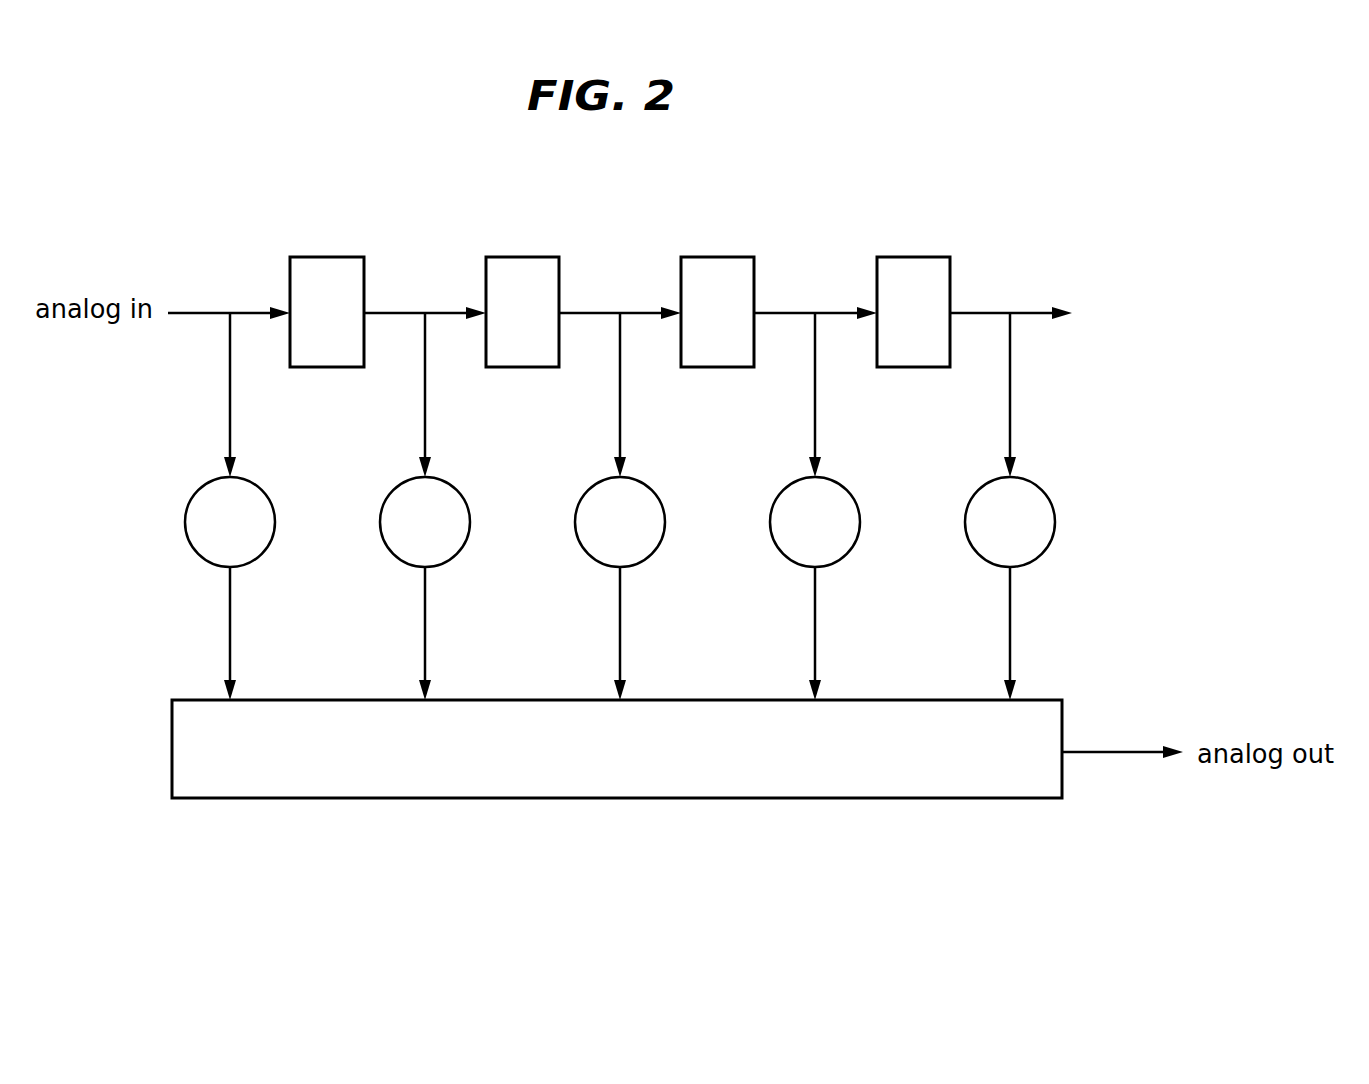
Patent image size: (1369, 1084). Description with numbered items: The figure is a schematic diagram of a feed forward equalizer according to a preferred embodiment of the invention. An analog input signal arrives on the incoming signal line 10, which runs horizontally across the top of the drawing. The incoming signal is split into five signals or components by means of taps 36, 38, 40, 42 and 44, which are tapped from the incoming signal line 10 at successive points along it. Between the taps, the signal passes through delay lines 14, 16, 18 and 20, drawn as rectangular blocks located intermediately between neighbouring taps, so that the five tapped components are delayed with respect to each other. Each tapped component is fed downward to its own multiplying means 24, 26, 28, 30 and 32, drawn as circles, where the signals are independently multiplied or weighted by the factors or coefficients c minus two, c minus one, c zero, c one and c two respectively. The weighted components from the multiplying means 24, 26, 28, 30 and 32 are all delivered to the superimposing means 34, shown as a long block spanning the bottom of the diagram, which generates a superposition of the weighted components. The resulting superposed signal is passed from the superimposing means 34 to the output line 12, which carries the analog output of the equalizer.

The incoming signal line 10 is at (183, 314).
The output line 12 is at (1115, 753).
The delay line 14 is at (328, 257).
The delay line 16 is at (524, 257).
The delay line 18 is at (719, 257).
The delay line 20 is at (915, 257).
The multiplying means 24 is at (275, 522).
The multiplying means 26 is at (470, 522).
The multiplying means 28 is at (665, 522).
The multiplying means 30 is at (860, 522).
The multiplying means 32 is at (1055, 522).
The superimposing means 34 is at (613, 799).
The tap 36 is at (230, 424).
The tap 38 is at (425, 424).
The tap 40 is at (620, 424).
The tap 42 is at (815, 424).
The tap 44 is at (1010, 424).